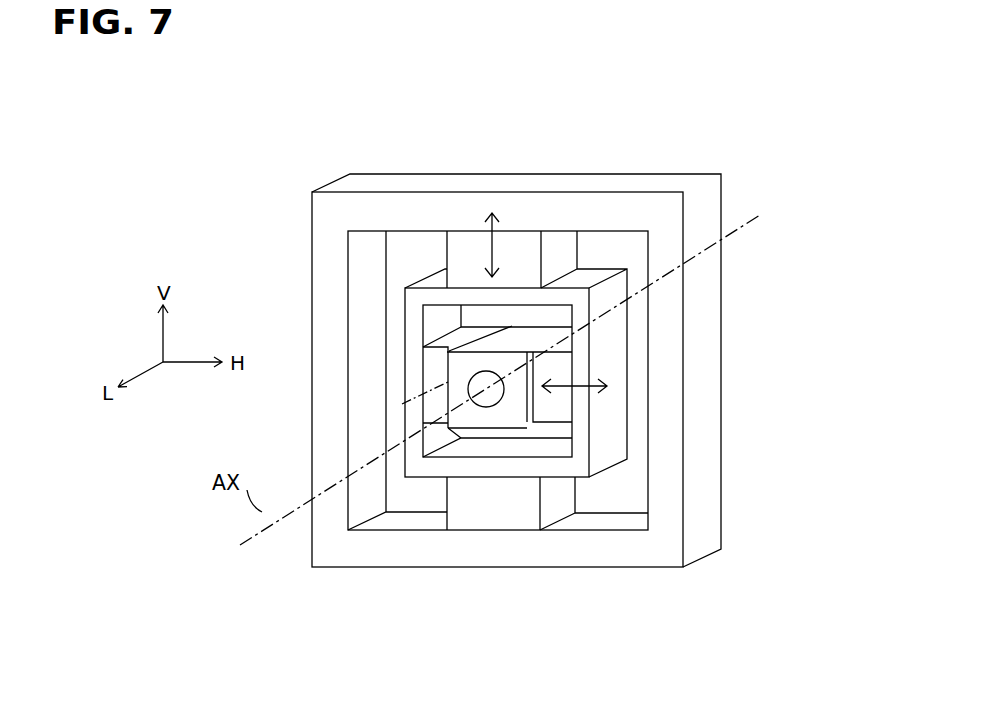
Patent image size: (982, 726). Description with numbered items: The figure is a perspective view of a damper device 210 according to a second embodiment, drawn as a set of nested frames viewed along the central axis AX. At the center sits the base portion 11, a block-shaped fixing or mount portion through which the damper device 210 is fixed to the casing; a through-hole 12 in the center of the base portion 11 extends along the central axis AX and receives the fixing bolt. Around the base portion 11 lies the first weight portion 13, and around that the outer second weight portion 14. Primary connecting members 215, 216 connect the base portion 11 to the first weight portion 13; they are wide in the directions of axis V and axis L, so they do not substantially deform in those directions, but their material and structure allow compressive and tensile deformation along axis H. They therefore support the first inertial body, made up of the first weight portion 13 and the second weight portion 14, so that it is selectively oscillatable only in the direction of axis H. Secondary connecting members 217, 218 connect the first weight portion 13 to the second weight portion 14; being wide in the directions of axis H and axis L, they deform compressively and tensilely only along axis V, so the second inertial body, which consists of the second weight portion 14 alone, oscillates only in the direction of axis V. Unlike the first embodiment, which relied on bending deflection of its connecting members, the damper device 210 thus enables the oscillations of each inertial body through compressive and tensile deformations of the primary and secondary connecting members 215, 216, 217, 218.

The damper device 210 is at (722, 148).
The second weight portion 14 is at (483, 212).
The first weight portion 13 is at (443, 293).
The through-hole 12 is at (482, 372).
The base portion 11 is at (453, 373).
The secondary connecting member 217 is at (520, 262).
The secondary connecting member 218 is at (480, 515).
The primary connecting member 216 is at (435, 390).
The primary connecting member 215 is at (555, 410).